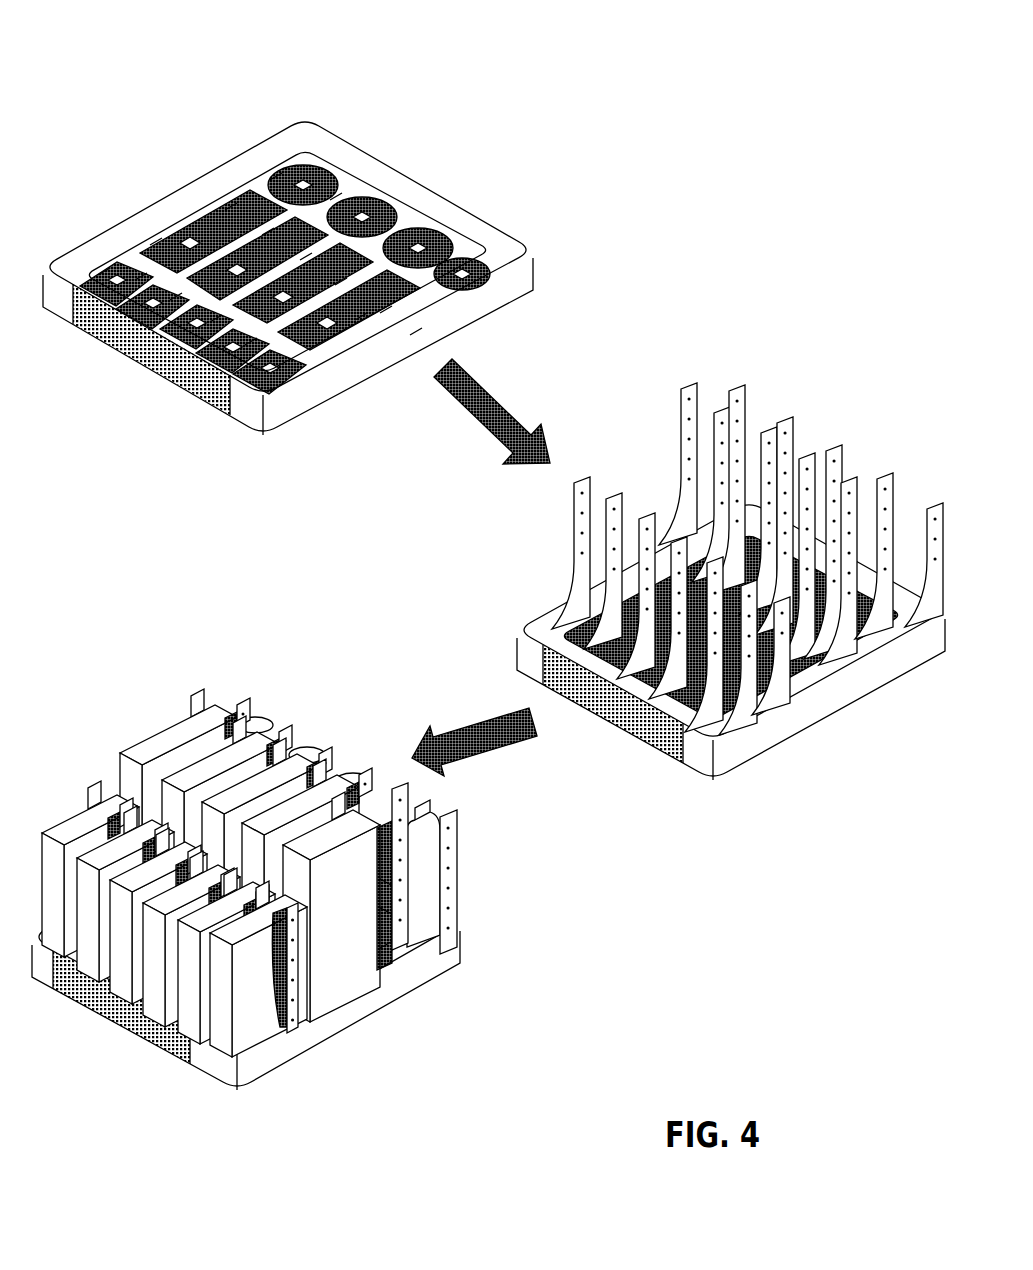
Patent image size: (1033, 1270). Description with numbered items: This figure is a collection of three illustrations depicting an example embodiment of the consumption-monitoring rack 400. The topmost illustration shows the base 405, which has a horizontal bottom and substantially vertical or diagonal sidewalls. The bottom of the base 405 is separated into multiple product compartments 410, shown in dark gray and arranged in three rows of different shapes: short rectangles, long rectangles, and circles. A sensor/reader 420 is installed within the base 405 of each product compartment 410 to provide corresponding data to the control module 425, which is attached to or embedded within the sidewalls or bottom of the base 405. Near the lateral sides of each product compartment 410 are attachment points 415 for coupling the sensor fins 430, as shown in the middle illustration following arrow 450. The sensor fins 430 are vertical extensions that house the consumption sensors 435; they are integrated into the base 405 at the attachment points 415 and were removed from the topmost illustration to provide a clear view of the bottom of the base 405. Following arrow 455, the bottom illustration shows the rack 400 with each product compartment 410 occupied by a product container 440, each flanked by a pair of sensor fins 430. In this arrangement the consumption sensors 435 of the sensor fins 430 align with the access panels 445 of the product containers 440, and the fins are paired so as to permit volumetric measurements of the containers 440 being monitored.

The consumption-monitoring rack 400 is at (864, 78).
The base 405 is at (340, 278).
The product compartments 410 is at (423, 238).
The attachment points 415 is at (270, 177).
The sensor/reader 420 is at (263, 370).
The control module 425 is at (137, 343).
The sensor fins 430 is at (830, 447).
The consumption sensors 435 is at (582, 580).
The product container 440 is at (163, 743).
The access panels 445 is at (393, 943).
The arrow 450 is at (492, 411).
The arrow 455 is at (474, 742).